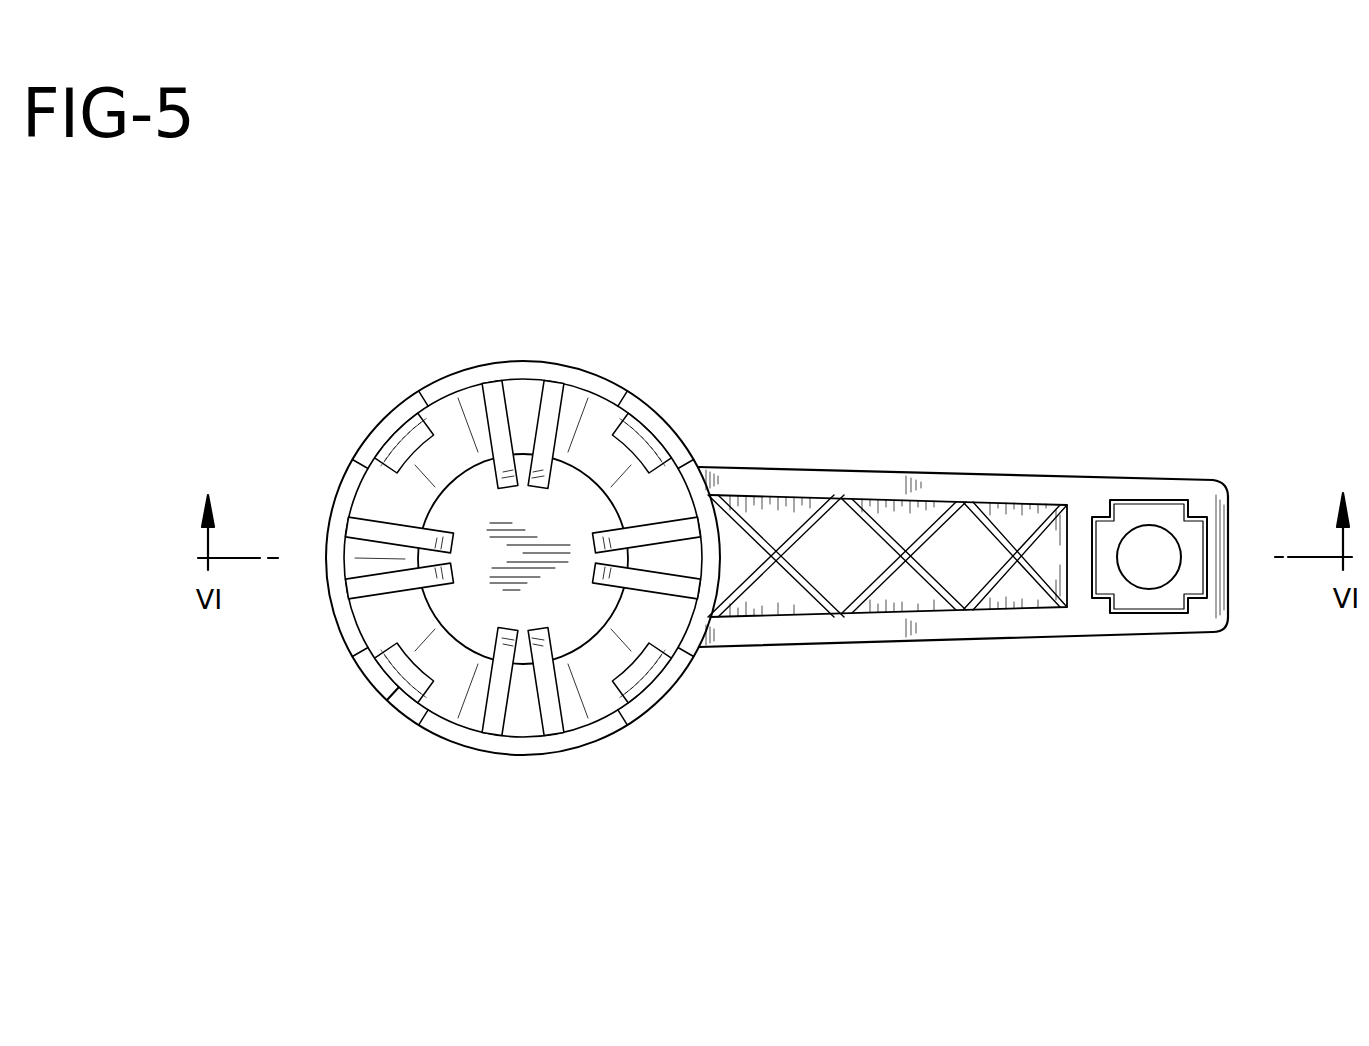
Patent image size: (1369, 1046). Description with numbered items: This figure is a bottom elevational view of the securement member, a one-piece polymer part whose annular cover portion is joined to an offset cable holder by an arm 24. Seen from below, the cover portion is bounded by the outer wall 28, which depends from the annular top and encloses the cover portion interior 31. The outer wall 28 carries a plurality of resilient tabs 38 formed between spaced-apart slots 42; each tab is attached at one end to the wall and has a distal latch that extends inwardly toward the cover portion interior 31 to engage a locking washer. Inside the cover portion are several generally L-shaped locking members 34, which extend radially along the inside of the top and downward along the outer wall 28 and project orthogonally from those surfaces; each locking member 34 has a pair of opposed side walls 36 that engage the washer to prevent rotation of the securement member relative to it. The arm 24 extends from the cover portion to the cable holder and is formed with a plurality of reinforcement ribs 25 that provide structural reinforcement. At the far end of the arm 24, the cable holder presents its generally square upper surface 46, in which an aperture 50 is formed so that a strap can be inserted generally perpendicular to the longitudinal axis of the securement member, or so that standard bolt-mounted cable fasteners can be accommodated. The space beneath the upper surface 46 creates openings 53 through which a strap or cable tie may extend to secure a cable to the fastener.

The arm 24 is at (872, 470).
The reinforcement ribs 25 is at (863, 593).
The outer wall 28 is at (598, 732).
The cover portion interior 31 is at (481, 514).
The locking members 34 is at (560, 382).
The side walls 36 is at (540, 722).
The resilient tabs 38 is at (392, 697).
The slots 42 is at (697, 657).
The upper surface 46 is at (1166, 518).
The aperture 50 is at (1147, 542).
The openings 53 is at (1207, 575).